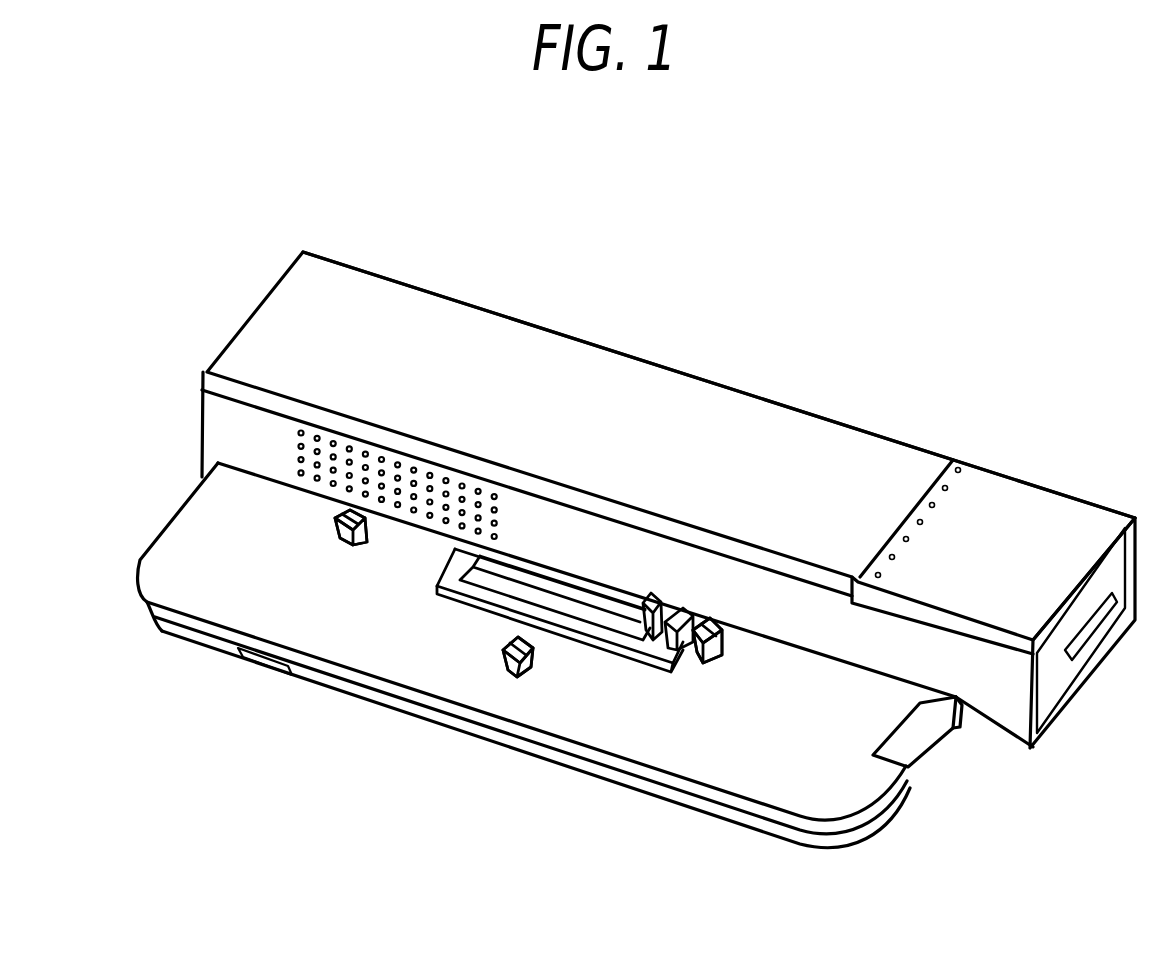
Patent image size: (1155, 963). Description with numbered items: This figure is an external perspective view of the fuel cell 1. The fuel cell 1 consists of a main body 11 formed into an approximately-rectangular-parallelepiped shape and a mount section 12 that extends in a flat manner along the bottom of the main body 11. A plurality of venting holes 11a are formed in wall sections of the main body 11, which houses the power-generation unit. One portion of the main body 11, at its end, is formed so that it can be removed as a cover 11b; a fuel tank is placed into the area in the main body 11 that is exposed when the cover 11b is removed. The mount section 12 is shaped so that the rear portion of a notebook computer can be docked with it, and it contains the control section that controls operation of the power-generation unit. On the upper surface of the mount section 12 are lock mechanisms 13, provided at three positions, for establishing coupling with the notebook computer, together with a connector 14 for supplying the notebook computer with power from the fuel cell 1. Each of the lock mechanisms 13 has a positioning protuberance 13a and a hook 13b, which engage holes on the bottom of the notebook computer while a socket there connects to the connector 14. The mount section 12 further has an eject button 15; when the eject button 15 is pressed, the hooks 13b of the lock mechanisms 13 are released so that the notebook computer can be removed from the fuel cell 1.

The fuel cell 1 is at (776, 363).
The main body 11 is at (645, 395).
The venting holes 11a is at (333, 488).
The cover 11b is at (1047, 508).
The mount section 12 is at (835, 790).
The lock mechanisms 13 is at (352, 552).
The positioning protuberance 13a is at (365, 537).
The hook 13b is at (337, 536).
The connector 14 is at (632, 625).
The eject button 15 is at (925, 753).